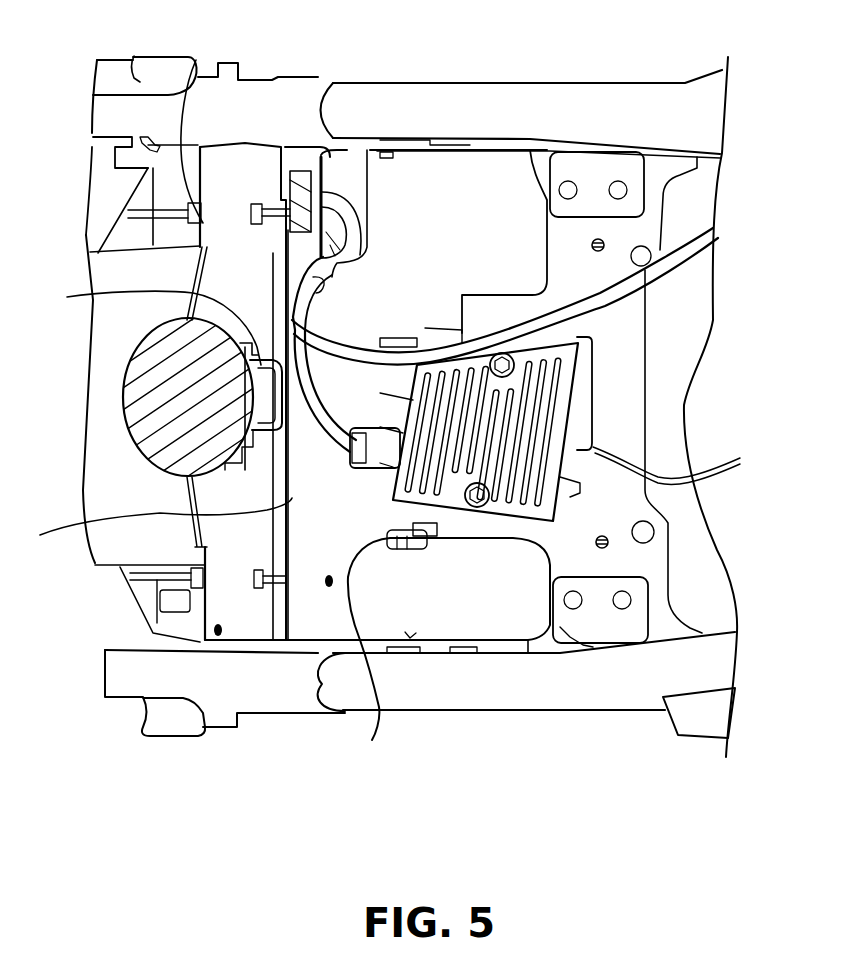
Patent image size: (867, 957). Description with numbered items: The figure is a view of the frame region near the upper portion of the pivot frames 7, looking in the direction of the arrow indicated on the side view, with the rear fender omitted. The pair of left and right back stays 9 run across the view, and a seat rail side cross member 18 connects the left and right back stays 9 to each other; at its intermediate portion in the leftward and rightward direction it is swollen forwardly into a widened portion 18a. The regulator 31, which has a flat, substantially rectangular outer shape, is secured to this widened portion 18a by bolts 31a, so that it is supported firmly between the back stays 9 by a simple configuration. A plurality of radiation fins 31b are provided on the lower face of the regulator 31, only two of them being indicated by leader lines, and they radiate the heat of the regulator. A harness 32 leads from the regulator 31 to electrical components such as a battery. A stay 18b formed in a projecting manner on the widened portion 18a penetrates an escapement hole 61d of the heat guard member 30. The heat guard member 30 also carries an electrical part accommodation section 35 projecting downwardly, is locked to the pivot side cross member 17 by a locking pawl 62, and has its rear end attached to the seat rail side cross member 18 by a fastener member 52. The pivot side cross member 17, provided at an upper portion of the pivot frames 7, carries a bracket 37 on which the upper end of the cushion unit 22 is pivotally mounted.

The pivot frame 7 is at (300, 88).
The back stay 9 is at (518, 82).
The pivot side cross member 17 is at (254, 145).
The seat rail side cross member 18 is at (630, 378).
The widened portion 18a is at (467, 297).
The stay 18b is at (372, 740).
The cushion unit 22 is at (127, 387).
The heat guard member 30 is at (387, 226).
The regulator 31 is at (569, 424).
The bolt 31a is at (518, 358).
The radiation fin 31b is at (687, 466).
The harness 32 is at (46, 532).
The electrical part accommodation section 35 is at (113, 487).
The bracket 37 is at (74, 298).
The fastener member 52 is at (598, 239).
The escapement hole 61d is at (427, 538).
The locking pawl 62 is at (192, 203).